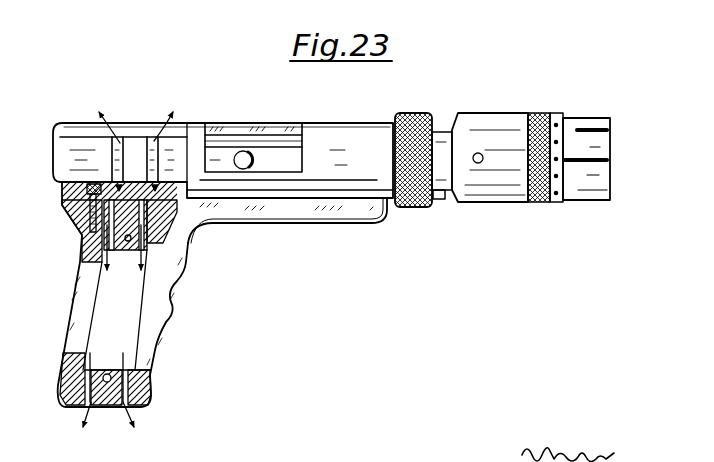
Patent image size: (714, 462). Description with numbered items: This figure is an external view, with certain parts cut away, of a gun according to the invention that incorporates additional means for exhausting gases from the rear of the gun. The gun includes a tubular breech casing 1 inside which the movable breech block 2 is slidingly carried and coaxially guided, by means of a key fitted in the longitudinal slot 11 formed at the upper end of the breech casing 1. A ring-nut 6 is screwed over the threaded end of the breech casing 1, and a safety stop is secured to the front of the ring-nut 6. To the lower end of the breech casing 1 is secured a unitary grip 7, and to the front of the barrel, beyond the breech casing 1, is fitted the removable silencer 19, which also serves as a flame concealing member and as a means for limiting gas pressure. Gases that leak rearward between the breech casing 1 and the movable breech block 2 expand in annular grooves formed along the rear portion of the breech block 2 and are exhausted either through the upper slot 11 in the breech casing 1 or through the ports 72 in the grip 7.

The tubular breech casing 1 is at (372, 185).
The longitudinal slot 11 is at (229, 128).
The movable breech block 2 is at (69, 158).
The ring-nut 6 is at (422, 112).
The removable silencer 19 is at (493, 143).
The unitary grip 7 is at (166, 313).
The ports 72 is at (99, 428).